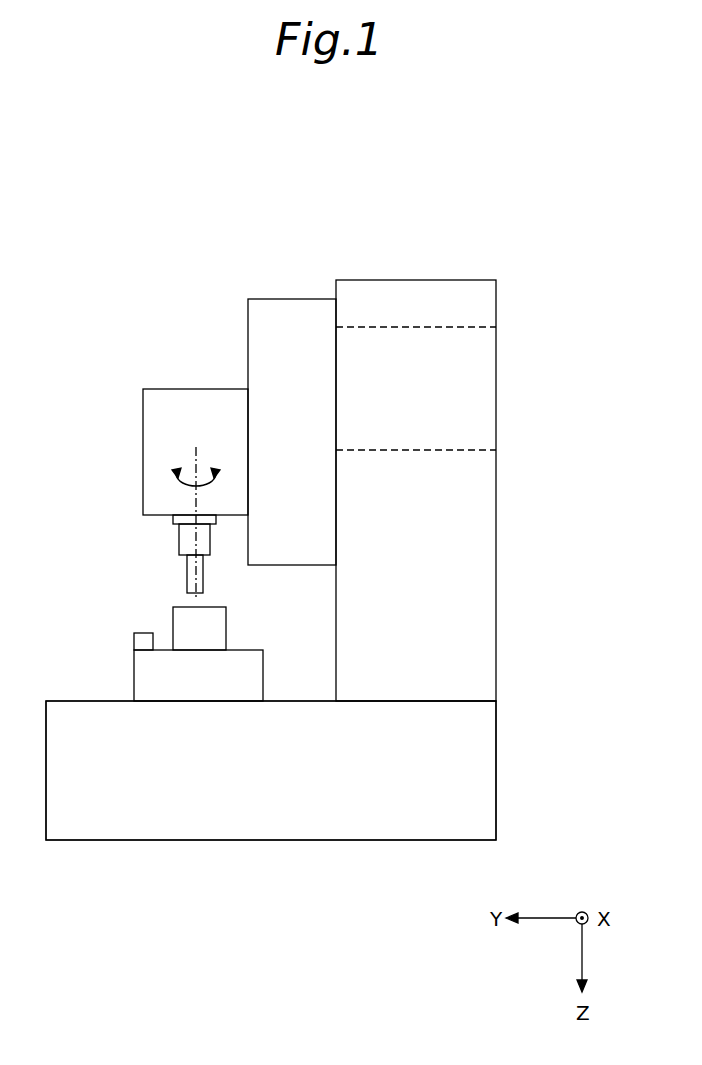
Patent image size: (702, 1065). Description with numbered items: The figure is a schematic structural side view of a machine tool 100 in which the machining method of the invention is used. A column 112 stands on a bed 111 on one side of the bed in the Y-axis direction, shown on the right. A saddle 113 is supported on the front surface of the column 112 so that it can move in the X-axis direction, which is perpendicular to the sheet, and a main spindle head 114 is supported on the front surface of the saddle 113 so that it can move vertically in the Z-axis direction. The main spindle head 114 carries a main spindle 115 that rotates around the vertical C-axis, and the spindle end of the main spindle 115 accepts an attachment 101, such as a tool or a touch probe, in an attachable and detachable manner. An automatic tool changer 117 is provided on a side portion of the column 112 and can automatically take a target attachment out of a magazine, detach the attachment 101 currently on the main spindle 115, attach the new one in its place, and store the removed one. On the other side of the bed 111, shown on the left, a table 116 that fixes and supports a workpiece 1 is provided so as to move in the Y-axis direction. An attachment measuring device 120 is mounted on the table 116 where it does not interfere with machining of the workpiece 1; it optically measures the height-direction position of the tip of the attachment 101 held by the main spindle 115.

The machine tool 100 is at (431, 223).
The bed 111 is at (496, 740).
The column 112 is at (496, 519).
The saddle 113 is at (298, 299).
The main spindle head 114 is at (193, 389).
The main spindle 115 is at (173, 519).
The table 116 is at (133, 678).
The automatic tool changer 117 is at (485, 395).
The attachment measuring device 120 is at (134, 640).
The attachment 101 is at (187, 573).
The workpiece 1 is at (172, 610).